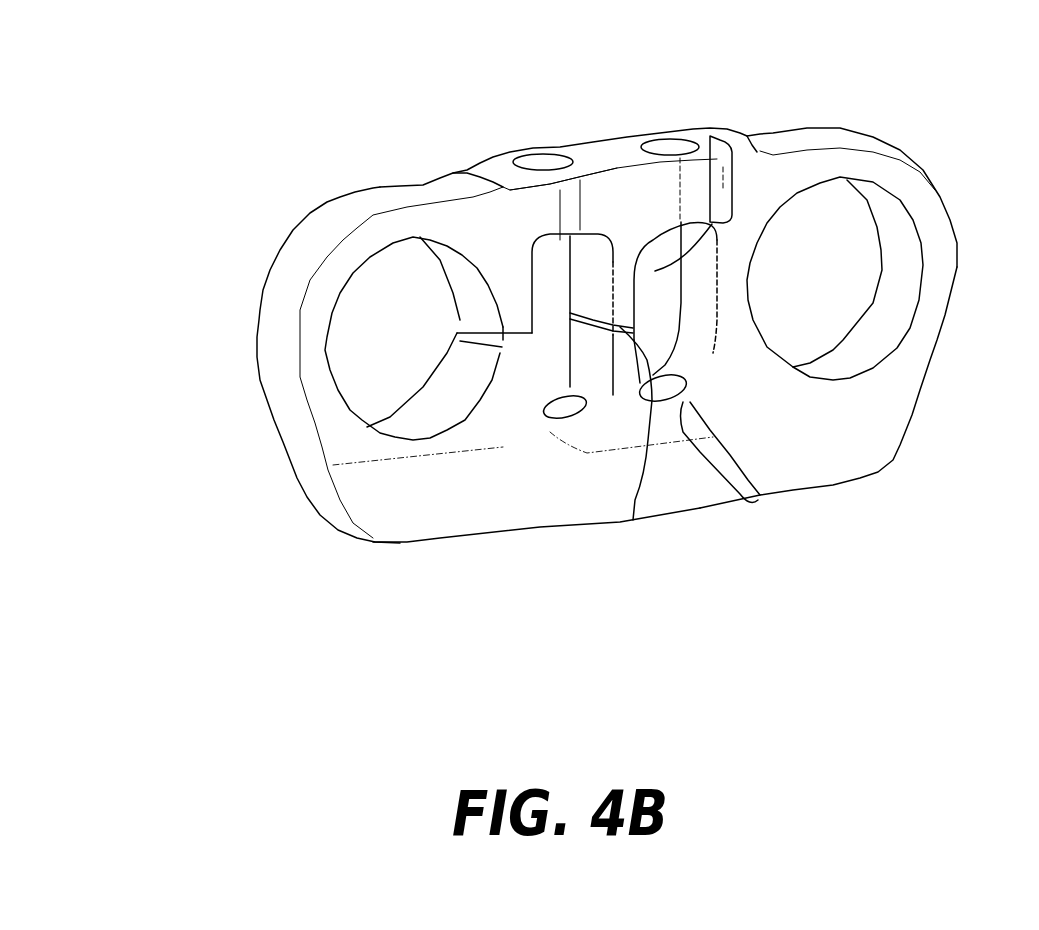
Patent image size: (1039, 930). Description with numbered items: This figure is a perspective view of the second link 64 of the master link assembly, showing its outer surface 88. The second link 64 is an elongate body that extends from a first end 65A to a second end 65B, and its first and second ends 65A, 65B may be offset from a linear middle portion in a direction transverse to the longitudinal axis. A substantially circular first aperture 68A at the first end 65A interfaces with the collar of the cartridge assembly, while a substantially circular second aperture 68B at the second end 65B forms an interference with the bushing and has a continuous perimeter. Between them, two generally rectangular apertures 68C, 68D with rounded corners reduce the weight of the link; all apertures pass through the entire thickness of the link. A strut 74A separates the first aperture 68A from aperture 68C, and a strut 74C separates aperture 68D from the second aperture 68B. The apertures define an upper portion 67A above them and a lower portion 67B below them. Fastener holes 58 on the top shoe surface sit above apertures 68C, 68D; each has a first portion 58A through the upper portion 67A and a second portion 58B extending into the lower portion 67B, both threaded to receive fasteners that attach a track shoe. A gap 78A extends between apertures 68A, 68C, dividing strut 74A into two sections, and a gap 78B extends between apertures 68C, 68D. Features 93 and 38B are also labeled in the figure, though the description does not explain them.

The second link 64 is at (286, 106).
The first end 65A is at (260, 296).
The second end 65B is at (945, 323).
The bottom surface 93 is at (453, 520).
The first aperture 68A is at (347, 350).
The second aperture 68B is at (850, 232).
The fastener hole 58 is at (540, 151).
The first portion 58A is at (563, 150).
The upper portion 67A is at (582, 207).
The outer surface 88 is at (607, 197).
The aperture 68D is at (710, 136).
The strut 74C is at (733, 288).
The aperture 68C is at (548, 275).
The strut 74A is at (520, 390).
The second portion 58B is at (570, 397).
The gap 78A is at (503, 365).
The central tongue 38B is at (618, 360).
The gap 78B is at (633, 520).
The lower portion 67B is at (750, 480).